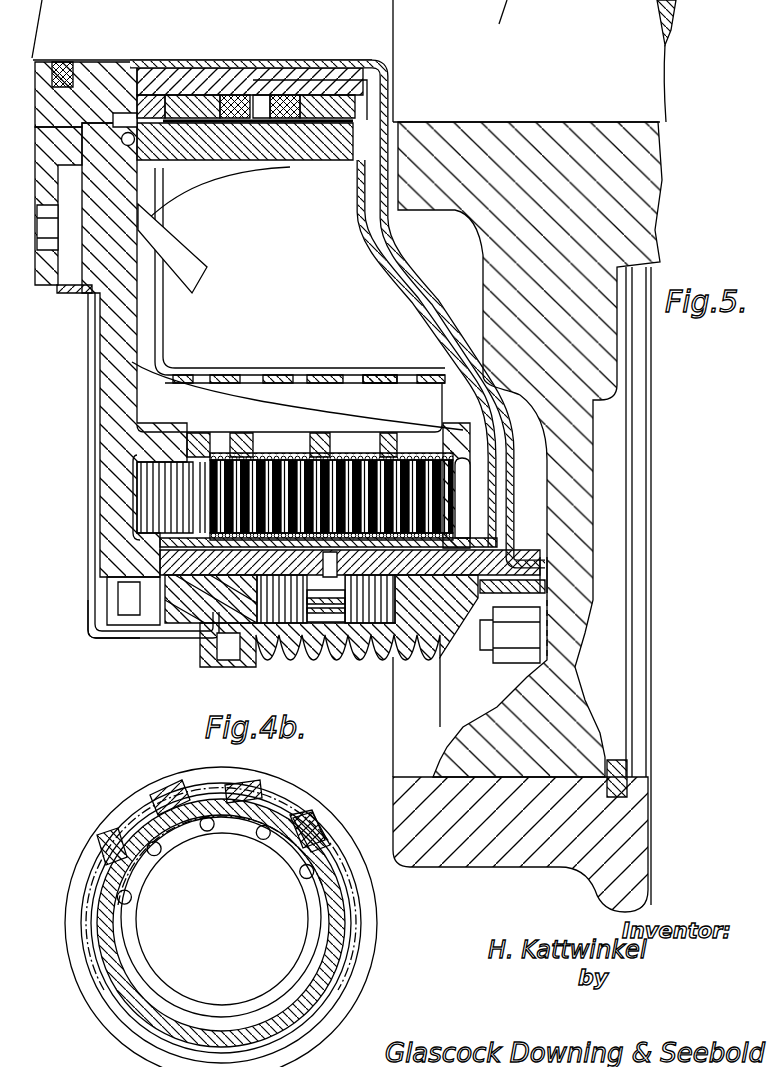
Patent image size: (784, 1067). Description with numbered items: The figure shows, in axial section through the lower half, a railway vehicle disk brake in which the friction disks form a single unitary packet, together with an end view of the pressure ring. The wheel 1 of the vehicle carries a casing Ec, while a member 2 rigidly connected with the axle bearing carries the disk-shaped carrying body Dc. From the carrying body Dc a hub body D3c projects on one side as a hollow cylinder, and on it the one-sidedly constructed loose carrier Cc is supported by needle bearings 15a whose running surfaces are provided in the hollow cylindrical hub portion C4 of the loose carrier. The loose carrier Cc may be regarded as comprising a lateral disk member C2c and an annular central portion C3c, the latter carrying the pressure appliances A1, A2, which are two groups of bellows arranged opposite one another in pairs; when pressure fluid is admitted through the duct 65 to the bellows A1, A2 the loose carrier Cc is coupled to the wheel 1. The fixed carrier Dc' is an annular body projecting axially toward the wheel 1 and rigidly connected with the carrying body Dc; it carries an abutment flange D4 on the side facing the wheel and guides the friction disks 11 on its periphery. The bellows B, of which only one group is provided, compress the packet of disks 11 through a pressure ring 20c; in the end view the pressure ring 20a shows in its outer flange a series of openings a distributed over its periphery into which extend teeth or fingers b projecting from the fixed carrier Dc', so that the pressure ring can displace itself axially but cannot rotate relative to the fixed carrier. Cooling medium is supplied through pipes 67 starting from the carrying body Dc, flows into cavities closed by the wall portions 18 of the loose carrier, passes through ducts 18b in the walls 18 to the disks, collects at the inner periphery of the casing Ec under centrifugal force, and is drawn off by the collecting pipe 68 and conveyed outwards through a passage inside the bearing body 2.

In FIG. 5, the wheel 1 is at (487, 720).
In FIG. 5, the axle bearing member 2 is at (68, 258).
In FIG. 5, the friction disks 11 is at (375, 465).
In FIG. 5, the needle bearings 15a is at (193, 60).
In FIG. 5, the wall portions 18 is at (321, 376).
In FIG. 5, the ducts 18b is at (400, 377).
In FIG. 5, the pressure ring 20c is at (204, 500).
In FIG. 4B, the pressure ring 20a is at (283, 795).
In FIG. 5, the ducts 65 is at (418, 292).
In FIG. 5, the pipes 67 is at (180, 266).
In FIG. 5, the collecting pipe 68 is at (98, 632).
In FIG. 5, the pressure appliance A1 is at (278, 640).
In FIG. 5, the pressure appliance A2 is at (368, 636).
In FIG. 5, the bellows B is at (150, 498).
In FIG. 4B, the bellows B is at (262, 836).
In FIG. 5, the hub portion C4 is at (190, 78).
In FIG. 5, the loose carrier Cc is at (180, 600).
In FIG. 5, the clutch sleeve C2c is at (517, 482).
In FIG. 5, the clutch hub C3c is at (322, 646).
In FIG. 5, the carrying body Dc is at (162, 319).
In FIG. 5, the fixed carrier Dc' is at (297, 305).
In FIG. 4B, the fixed carrier Dc' is at (210, 792).
In FIG. 5, the hub body D3c is at (273, 150).
In FIG. 5, the abutment flange D4 is at (470, 467).
In FIG. 5, the shell Ec is at (90, 537).
In FIG. 4B, the openings a is at (190, 785).
In FIG. 4B, the teeth or fingers b is at (105, 850).